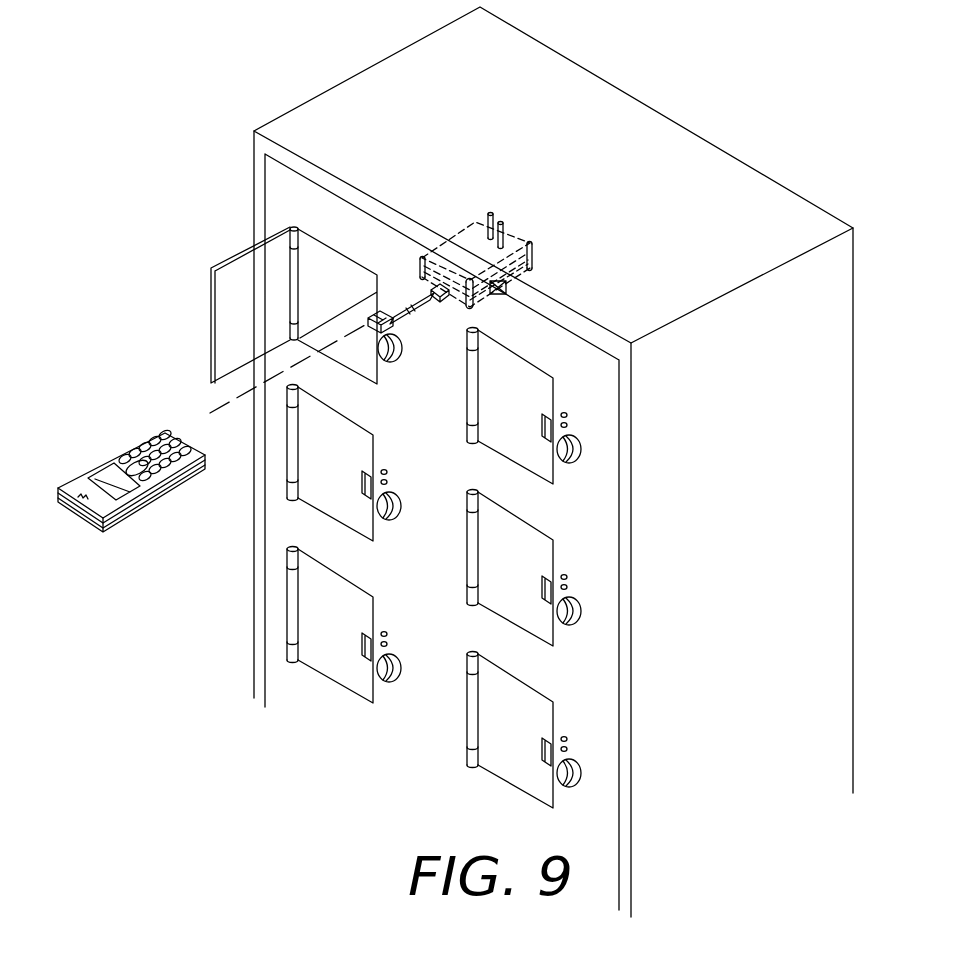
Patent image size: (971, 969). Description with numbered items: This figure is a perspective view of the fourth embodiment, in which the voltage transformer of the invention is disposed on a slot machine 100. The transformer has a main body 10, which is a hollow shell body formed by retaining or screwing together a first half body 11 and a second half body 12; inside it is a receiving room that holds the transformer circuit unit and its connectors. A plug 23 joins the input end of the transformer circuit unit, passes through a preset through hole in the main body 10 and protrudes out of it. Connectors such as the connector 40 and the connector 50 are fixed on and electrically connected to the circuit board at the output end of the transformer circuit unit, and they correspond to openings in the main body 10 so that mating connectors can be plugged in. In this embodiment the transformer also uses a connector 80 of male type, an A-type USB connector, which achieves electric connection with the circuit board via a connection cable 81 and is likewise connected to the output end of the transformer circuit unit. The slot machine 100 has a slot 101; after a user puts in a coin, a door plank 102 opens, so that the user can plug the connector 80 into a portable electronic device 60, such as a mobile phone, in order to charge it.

The main body 10 is at (462, 214).
The first half body 11 is at (538, 263).
The second half body 12 is at (535, 241).
The plug 23 is at (505, 220).
The connector 40 is at (497, 296).
The connector 50 is at (536, 287).
The portable electronic device 60 is at (88, 470).
The connector 80 is at (405, 312).
The connection cable 81 is at (437, 284).
The slot machine 100 is at (837, 488).
The slot 101 is at (397, 360).
The door plank 102 is at (211, 330).